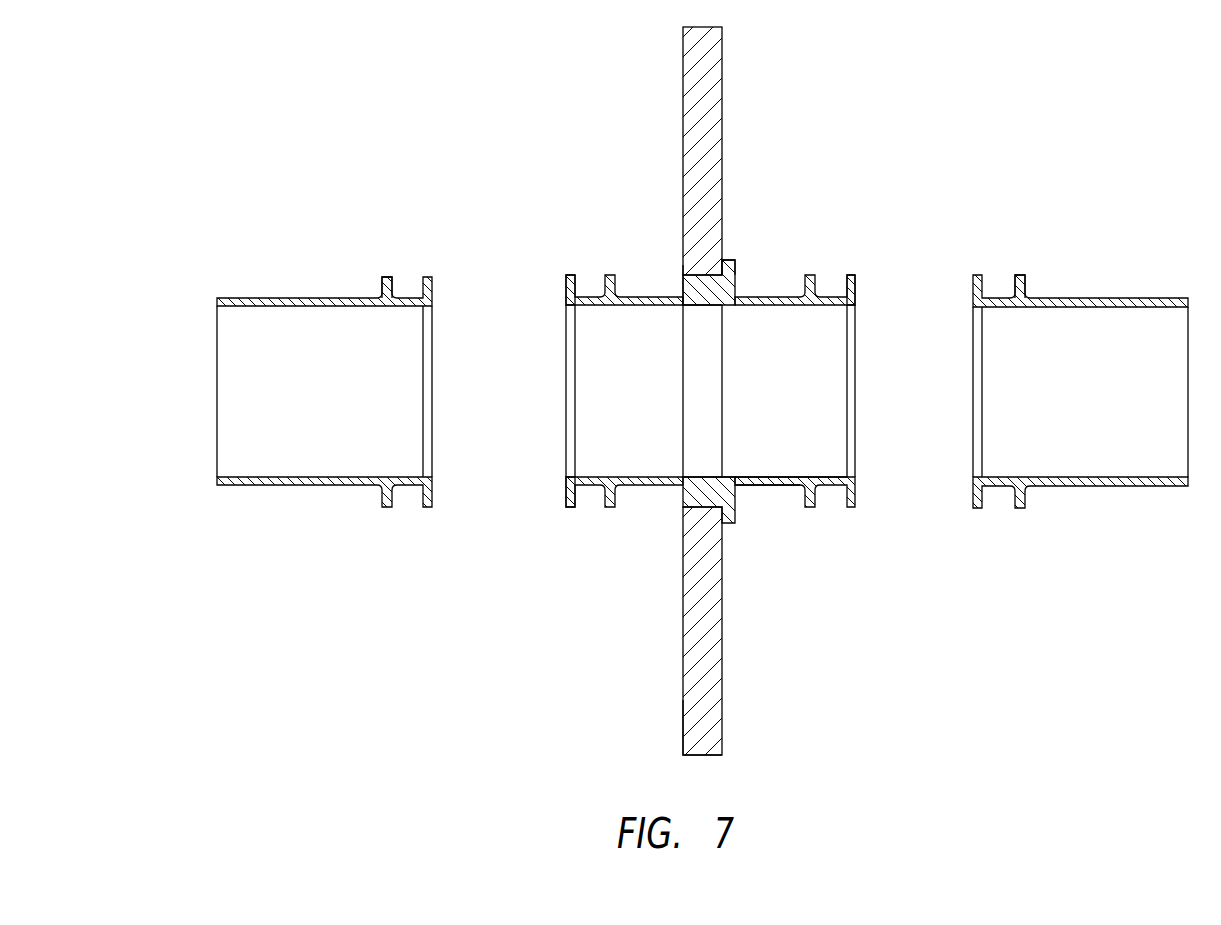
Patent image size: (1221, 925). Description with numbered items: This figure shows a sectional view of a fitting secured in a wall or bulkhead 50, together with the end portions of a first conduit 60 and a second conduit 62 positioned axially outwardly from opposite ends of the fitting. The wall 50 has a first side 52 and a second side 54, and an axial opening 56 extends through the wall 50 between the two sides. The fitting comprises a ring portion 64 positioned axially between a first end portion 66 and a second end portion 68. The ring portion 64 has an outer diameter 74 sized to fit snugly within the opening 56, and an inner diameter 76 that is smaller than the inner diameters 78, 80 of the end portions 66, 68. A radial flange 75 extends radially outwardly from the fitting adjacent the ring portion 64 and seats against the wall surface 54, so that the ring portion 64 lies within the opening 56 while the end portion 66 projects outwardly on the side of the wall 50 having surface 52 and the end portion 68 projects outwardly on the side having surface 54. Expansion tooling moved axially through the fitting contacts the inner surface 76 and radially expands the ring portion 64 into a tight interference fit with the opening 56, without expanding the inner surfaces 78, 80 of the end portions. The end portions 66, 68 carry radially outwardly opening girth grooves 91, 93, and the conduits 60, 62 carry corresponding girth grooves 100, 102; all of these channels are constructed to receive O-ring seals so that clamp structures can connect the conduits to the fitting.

The wall 50 is at (688, 612).
The first side 52 is at (683, 723).
The second side 54 is at (722, 122).
The axial opening 56 is at (712, 498).
The first conduit 60 is at (255, 483).
The second conduit 62 is at (1120, 485).
The ring portion 64 is at (707, 302).
The first end portion 66 is at (653, 297).
The second end portion 68 is at (775, 483).
The outer diameter 74 is at (683, 264).
The radial flange 75 is at (736, 261).
The inner diameter 76 is at (705, 470).
The inner diameter of first end portion 78 is at (592, 475).
The inner diameter of second end portion 80 is at (790, 475).
The girth groove 91 is at (592, 282).
The girth groove 93 is at (835, 282).
The girth groove 100 is at (410, 283).
The girth groove 102 is at (1002, 283).